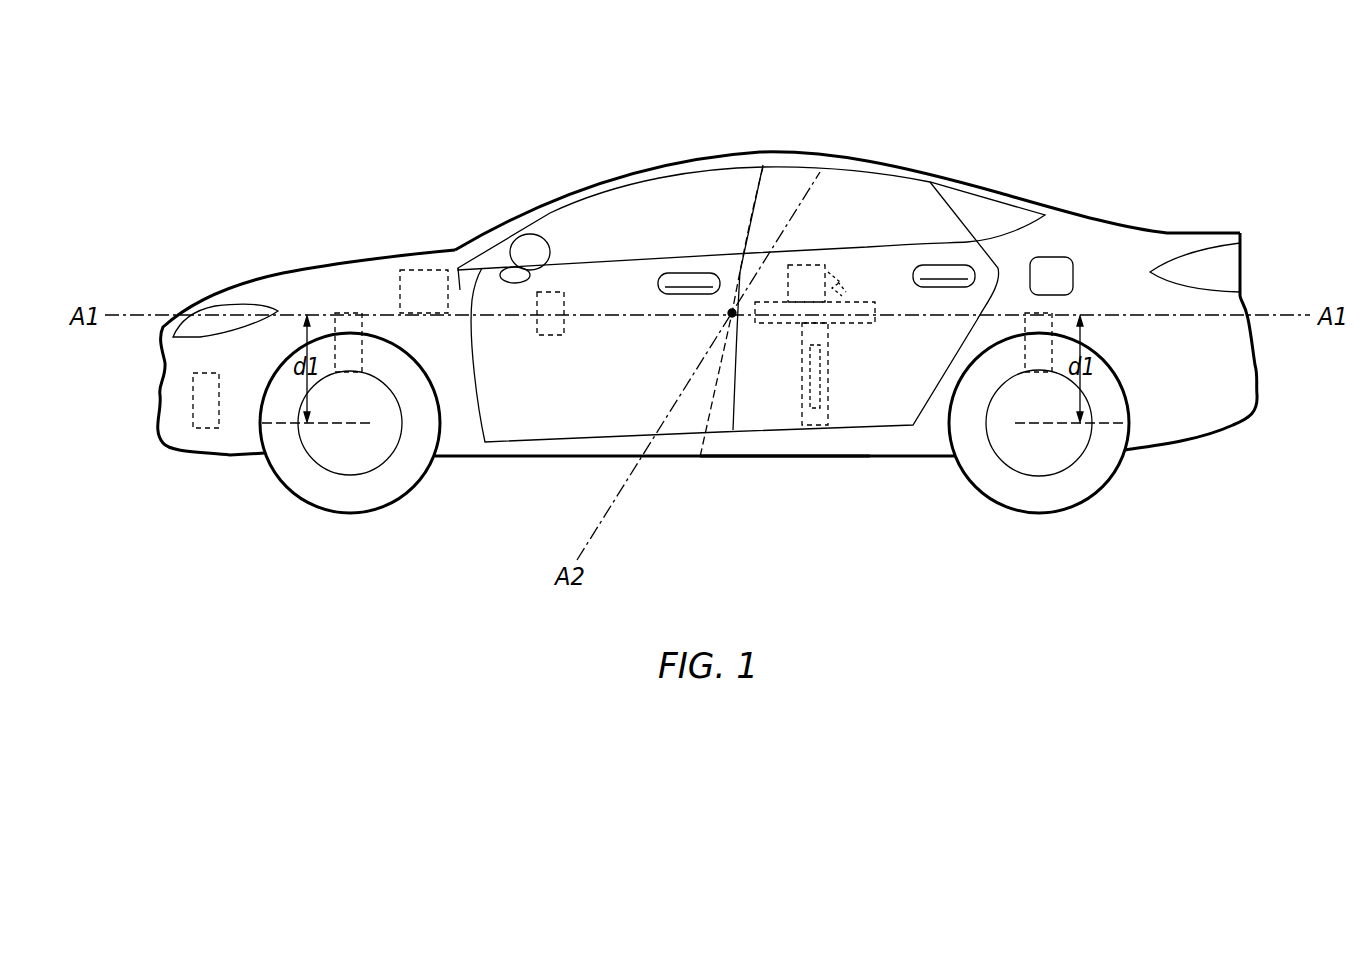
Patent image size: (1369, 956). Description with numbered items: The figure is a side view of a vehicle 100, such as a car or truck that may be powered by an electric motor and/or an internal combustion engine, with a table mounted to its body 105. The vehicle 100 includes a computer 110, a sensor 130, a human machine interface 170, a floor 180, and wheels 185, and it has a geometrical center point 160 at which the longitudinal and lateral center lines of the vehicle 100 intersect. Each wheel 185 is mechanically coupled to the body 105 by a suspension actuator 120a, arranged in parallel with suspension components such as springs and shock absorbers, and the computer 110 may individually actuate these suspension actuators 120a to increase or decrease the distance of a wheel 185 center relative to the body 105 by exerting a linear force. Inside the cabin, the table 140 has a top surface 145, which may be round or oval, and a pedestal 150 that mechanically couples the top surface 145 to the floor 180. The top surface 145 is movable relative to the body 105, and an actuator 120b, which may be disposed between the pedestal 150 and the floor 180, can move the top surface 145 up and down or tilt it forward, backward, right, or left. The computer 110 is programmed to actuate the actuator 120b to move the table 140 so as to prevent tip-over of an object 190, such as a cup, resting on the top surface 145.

The vehicle 100 is at (604, 116).
The body 105 is at (548, 205).
The computer 110 is at (410, 270).
The suspension actuator 120a is at (348, 313).
The actuator 120b is at (820, 425).
The sensor 130 is at (193, 385).
The table 140 is at (846, 288).
The top surface 145 is at (758, 302).
The pedestal 150 is at (830, 396).
The geometrical center point 160 is at (700, 457).
The human machine interface 170 is at (550, 337).
The floor 180 is at (787, 458).
The wheel 185 is at (322, 508).
The object 190 is at (808, 265).